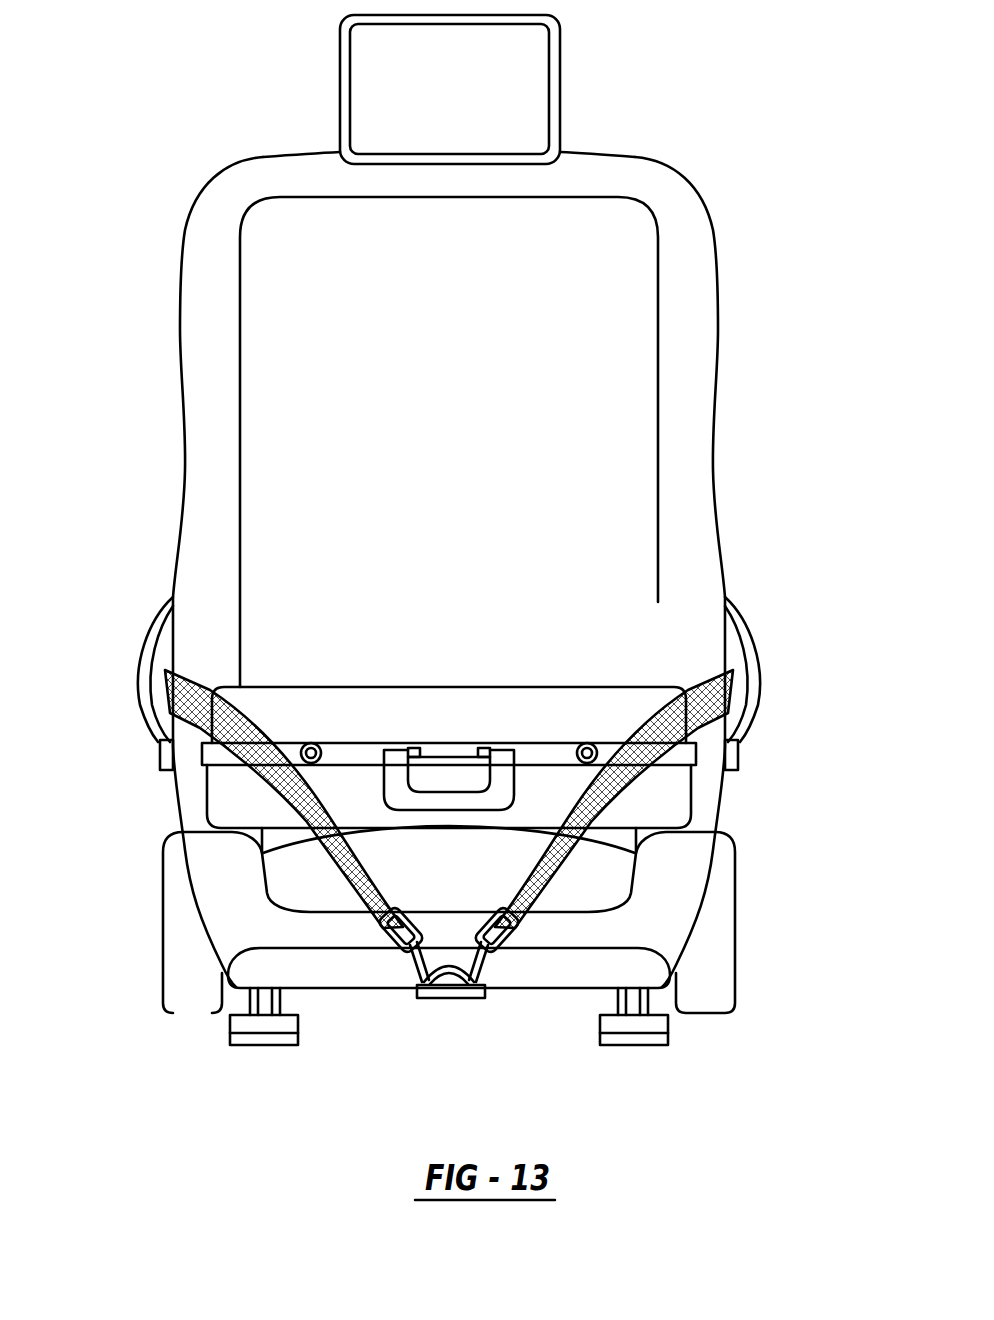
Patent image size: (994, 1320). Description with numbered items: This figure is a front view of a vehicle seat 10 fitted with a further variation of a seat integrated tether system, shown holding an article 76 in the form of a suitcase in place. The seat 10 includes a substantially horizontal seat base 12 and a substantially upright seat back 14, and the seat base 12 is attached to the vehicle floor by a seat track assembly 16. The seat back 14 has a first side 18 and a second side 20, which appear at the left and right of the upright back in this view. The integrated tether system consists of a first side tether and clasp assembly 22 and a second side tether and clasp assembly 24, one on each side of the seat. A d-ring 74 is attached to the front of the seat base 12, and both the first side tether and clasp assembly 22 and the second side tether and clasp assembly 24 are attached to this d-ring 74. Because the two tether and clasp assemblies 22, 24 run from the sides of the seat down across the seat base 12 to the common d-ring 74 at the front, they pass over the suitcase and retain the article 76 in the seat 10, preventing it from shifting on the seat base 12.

The seat 10 is at (789, 97).
The seat base 12 is at (655, 883).
The seat back 14 is at (693, 468).
The seat track assembly 16 is at (272, 1023).
The first side 18 is at (202, 250).
The second side 20 is at (710, 292).
The first side tether and clasp assembly 22 is at (195, 733).
The second side tether and clasp assembly 24 is at (708, 702).
The d-ring 74 is at (492, 983).
The article 76 is at (357, 708).